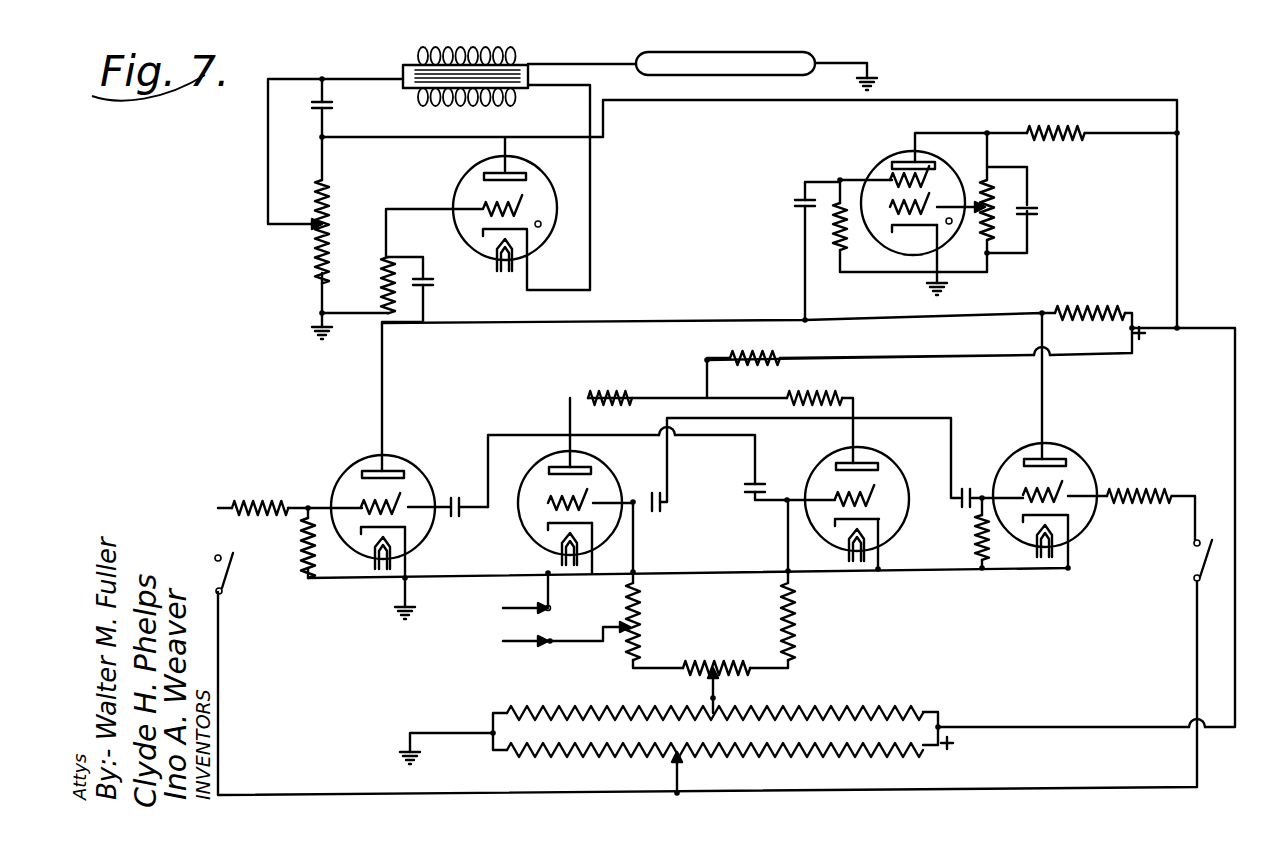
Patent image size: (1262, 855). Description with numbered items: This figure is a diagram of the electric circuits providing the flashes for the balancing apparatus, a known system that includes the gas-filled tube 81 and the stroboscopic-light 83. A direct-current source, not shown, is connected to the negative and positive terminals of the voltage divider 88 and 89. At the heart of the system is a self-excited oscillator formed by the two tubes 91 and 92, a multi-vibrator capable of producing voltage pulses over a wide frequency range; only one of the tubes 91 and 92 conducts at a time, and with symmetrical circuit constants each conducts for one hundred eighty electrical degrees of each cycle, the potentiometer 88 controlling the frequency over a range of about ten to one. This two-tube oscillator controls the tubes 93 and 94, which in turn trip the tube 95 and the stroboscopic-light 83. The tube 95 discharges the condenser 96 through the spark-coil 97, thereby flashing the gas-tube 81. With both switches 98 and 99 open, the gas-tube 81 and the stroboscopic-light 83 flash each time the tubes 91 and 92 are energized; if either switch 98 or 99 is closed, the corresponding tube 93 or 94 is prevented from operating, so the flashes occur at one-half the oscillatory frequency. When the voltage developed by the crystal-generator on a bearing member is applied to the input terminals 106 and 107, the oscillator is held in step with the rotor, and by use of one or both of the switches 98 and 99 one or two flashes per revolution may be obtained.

The spark-coil 97 is at (515, 49).
The gas-filled tube 81 is at (718, 60).
The condenser 96 is at (332, 105).
The tube 95 is at (471, 213).
The stroboscopic-light 83 is at (873, 178).
The tube 93 is at (522, 565).
The oscillator tube 91 is at (565, 508).
The oscillator tube 92 is at (870, 504).
The tube 94 is at (1068, 497).
The switch 98 is at (236, 573).
The switch 99 is at (1181, 560).
The input terminal 106 is at (546, 607).
The input terminal 107 is at (550, 645).
The potentiometer of voltage divider 88 is at (715, 703).
The voltage divider 89 is at (715, 764).